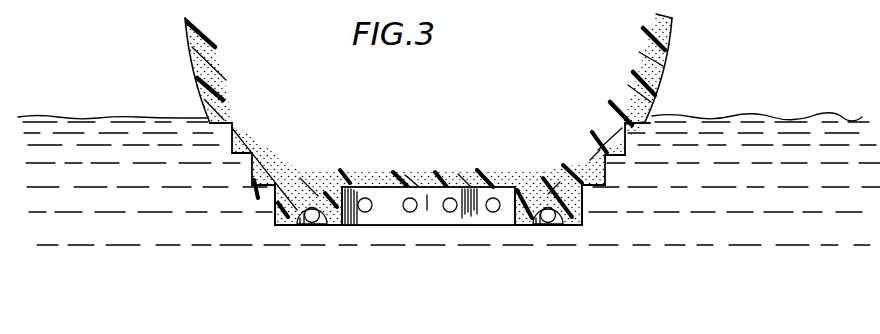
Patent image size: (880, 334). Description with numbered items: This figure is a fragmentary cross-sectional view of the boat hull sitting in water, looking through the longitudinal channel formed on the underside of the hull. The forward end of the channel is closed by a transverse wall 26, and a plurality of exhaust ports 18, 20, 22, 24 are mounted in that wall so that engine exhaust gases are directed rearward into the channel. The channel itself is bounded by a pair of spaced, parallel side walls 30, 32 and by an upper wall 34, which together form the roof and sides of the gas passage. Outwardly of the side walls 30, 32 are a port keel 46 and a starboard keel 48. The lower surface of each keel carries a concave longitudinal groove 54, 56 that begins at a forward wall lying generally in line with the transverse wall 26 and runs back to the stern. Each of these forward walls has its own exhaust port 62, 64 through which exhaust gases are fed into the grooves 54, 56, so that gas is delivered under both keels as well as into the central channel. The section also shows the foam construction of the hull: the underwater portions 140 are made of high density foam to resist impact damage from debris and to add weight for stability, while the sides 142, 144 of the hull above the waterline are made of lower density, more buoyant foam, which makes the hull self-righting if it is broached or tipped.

The exhaust port 18 is at (488, 209).
The exhaust port 20 is at (445, 187).
The exhaust port 22 is at (427, 204).
The exhaust port 24 is at (362, 198).
The transverse wall 26 is at (402, 199).
The side wall 30 is at (348, 226).
The side wall 32 is at (513, 218).
The upper wall 34 is at (487, 187).
The port keel 46 is at (275, 197).
The starboard keel 48 is at (582, 210).
The concave longitudinal groove 54 is at (441, 174).
The concave longitudinal groove 56 is at (537, 182).
The exhaust port 62 is at (320, 235).
The exhaust port 64 is at (553, 229).
The underwater portions 140 is at (597, 140).
The side of hull 142 is at (198, 78).
The side of hull 144 is at (662, 50).